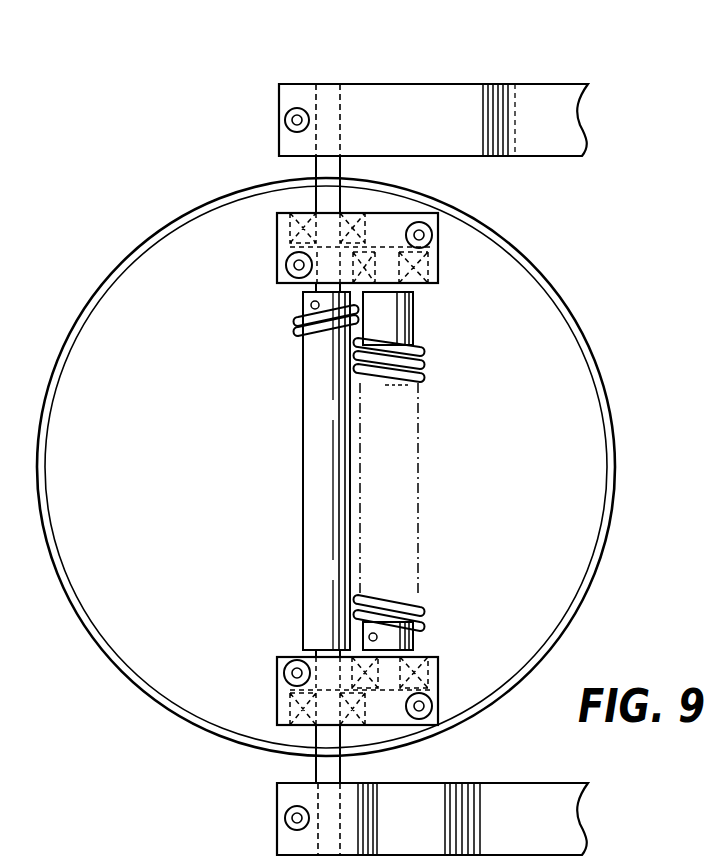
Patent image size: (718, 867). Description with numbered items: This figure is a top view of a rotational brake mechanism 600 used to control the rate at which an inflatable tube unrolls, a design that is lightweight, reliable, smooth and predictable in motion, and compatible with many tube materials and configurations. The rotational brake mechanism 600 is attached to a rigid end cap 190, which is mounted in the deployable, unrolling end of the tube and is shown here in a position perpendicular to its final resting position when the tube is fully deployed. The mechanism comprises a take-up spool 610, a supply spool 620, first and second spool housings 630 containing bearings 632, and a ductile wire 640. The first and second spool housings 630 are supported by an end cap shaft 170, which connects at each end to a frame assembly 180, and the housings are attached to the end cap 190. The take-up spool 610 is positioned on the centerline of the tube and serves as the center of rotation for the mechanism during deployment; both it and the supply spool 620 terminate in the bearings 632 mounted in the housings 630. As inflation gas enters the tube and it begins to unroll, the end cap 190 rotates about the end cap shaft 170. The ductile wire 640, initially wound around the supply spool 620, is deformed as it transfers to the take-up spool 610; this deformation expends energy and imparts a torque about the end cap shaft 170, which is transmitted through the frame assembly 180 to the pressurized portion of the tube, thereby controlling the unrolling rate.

The end cap shaft 170 is at (316, 163).
The frame assembly 180 is at (417, 95).
The rigid end cap 190 is at (543, 231).
The rotational brake mechanism 600 is at (319, 469).
The take-up spool 610 is at (313, 478).
The supply spool 620 is at (413, 322).
The spool housings 630 is at (277, 257).
The bearings 632 is at (438, 660).
The ductile wire 640 is at (418, 490).